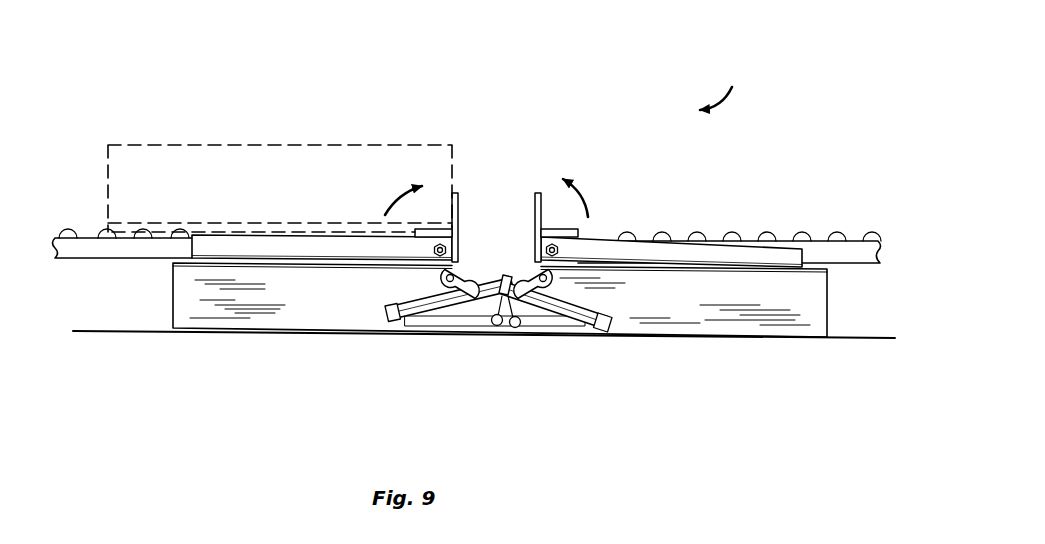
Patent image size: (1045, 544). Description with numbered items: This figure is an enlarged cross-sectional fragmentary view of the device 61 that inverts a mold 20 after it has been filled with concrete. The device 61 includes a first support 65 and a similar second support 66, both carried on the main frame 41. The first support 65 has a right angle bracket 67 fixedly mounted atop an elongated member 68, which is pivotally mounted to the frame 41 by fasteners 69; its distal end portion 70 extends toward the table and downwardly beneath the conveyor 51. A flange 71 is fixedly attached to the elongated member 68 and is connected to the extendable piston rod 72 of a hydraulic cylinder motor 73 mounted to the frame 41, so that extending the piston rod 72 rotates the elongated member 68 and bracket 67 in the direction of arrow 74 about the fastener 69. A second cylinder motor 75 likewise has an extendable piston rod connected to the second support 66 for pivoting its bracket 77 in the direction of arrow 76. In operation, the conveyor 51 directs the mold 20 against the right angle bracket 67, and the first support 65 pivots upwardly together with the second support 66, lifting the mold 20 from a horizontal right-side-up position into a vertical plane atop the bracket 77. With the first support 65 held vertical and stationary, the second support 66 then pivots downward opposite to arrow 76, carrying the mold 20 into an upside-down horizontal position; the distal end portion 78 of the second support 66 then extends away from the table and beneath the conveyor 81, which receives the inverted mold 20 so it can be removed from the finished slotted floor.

The mold 20 is at (170, 145).
The main frame 41 is at (702, 317).
The conveyor 51 is at (83, 238).
The device 61 is at (723, 88).
The first support 65 is at (467, 191).
The second support 66 is at (531, 216).
The right angle bracket 67 is at (458, 212).
The elongated member 68 is at (290, 248).
The fastener 69 is at (437, 253).
The distal end portion 70 is at (203, 247).
The flange 71 is at (442, 265).
The piston rod 72 is at (477, 277).
The hydraulic cylinder motor 73 is at (545, 310).
The arrow 74 is at (400, 190).
The second cylinder motor 75 is at (432, 310).
The arrow 76 is at (580, 190).
The bracket 77 is at (542, 193).
The distal end portion 78 is at (747, 257).
The conveyor 81 is at (852, 245).